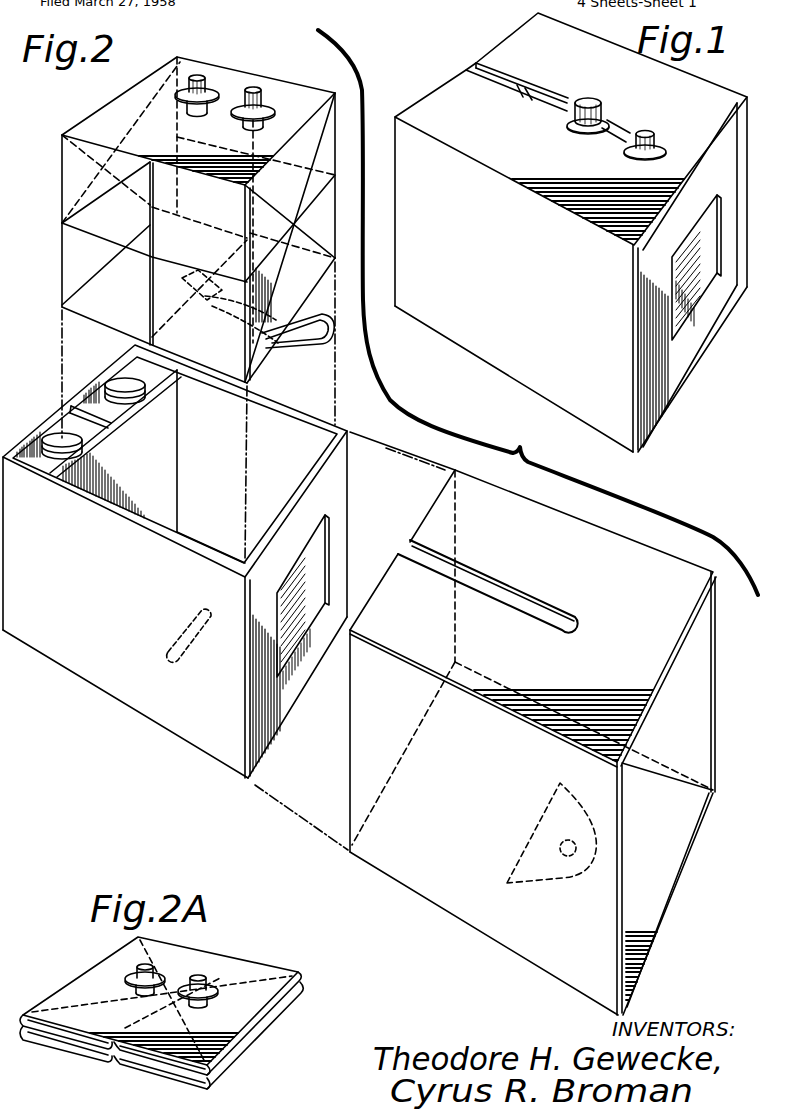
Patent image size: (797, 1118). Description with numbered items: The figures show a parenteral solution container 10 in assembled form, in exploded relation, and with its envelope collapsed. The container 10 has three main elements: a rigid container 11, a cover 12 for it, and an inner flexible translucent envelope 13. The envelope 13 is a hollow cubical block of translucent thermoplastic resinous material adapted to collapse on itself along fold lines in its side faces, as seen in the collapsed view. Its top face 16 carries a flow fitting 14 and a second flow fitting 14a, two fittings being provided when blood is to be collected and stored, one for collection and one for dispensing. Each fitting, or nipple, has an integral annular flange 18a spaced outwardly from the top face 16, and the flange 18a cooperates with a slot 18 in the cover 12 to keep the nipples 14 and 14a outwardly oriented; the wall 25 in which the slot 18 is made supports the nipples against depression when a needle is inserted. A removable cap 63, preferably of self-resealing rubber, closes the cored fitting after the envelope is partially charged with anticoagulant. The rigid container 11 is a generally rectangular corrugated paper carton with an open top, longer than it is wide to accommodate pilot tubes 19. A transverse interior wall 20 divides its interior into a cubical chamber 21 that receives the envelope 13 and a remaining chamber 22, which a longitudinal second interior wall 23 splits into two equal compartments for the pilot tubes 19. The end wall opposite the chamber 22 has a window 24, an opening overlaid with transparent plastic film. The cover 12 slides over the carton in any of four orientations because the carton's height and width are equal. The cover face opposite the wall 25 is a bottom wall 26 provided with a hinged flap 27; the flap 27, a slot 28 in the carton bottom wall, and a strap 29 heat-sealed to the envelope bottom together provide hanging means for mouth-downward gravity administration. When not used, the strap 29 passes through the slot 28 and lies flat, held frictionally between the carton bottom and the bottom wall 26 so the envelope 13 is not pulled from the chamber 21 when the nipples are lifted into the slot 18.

In FIG. 1, the parenteral solution container 10 is at (571, 232).
In FIG. 1, the rigid container 11 is at (665, 382).
In FIG. 2, the rigid container 11 is at (194, 561).
In FIG. 1, the cover 12 is at (523, 355).
In FIG. 2, the cover 12 is at (548, 723).
In FIG. 1, the flexible translucent envelope 13 is at (544, 102).
In FIG. 2, the flexible translucent envelope 13 is at (175, 208).
In FIG. 2A, the flexible translucent envelope 13 is at (166, 1007).
In FIG. 1, the flow fitting 14 is at (643, 133).
In FIG. 2, the flow fitting 14 is at (256, 90).
In FIG. 2A, the flow fitting 14 is at (205, 977).
In FIG. 2, the second flow fitting 14a is at (200, 77).
In FIG. 2A, the second flow fitting 14a is at (140, 967).
In FIG. 2, the top face 16 is at (130, 98).
In FIG. 2A, the top face 16 is at (257, 970).
In FIG. 1, the slot 18 is at (535, 95).
In FIG. 2, the slot 18 is at (535, 607).
In FIG. 1, the annular flange 18a is at (654, 141).
In FIG. 2, the annular flange 18a is at (273, 100).
In FIG. 2A, the annular flange 18a is at (212, 986).
In FIG. 2, the pilot tubes 19 is at (115, 383).
In FIG. 2, the transverse interior wall 20 is at (90, 472).
In FIG. 2, the cubical chamber 21 is at (320, 440).
In FIG. 2, the remaining chamber 22 is at (70, 418).
In FIG. 2, the second interior wall 23 is at (88, 390).
In FIG. 1, the window 24 is at (688, 310).
In FIG. 2, the window 24 is at (325, 545).
In FIG. 1, the wall 25 is at (695, 88).
In FIG. 2, the wall 25 is at (680, 608).
In FIG. 2, the bottom wall 26 is at (492, 920).
In FIG. 2, the hinged flap 27 is at (545, 883).
In FIG. 2, the slot 28 is at (185, 627).
In FIG. 2, the strap 29 is at (297, 345).
In FIG. 1, the removable cap 63 is at (594, 100).